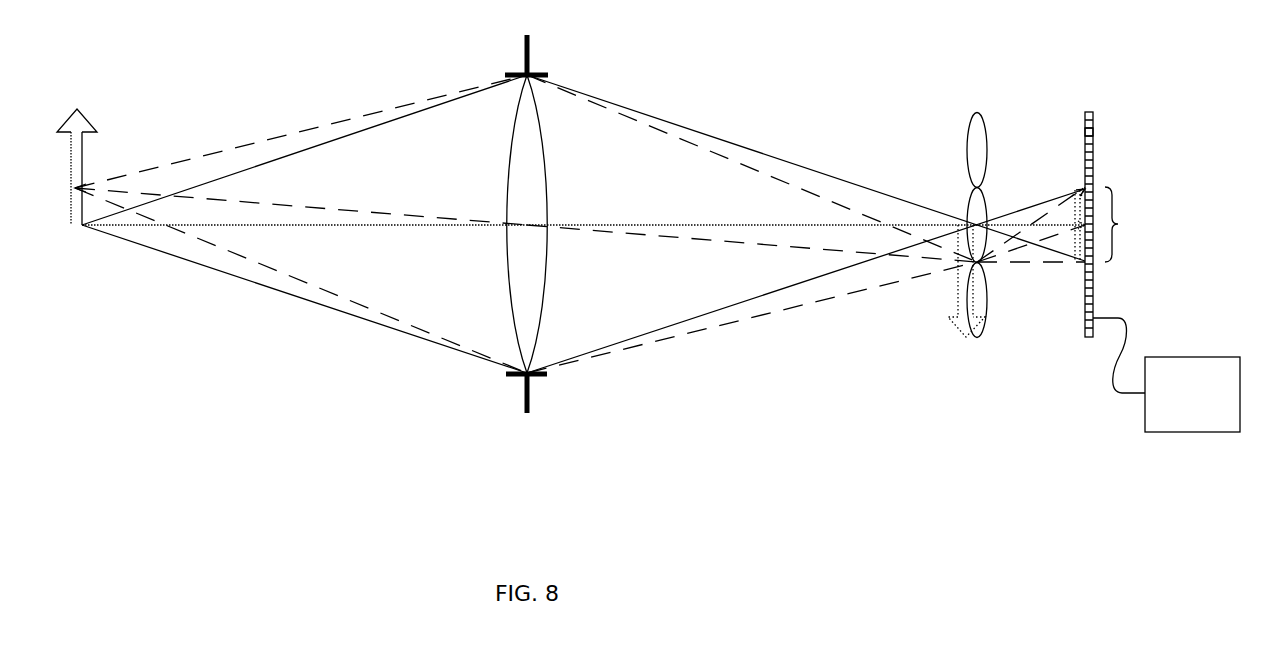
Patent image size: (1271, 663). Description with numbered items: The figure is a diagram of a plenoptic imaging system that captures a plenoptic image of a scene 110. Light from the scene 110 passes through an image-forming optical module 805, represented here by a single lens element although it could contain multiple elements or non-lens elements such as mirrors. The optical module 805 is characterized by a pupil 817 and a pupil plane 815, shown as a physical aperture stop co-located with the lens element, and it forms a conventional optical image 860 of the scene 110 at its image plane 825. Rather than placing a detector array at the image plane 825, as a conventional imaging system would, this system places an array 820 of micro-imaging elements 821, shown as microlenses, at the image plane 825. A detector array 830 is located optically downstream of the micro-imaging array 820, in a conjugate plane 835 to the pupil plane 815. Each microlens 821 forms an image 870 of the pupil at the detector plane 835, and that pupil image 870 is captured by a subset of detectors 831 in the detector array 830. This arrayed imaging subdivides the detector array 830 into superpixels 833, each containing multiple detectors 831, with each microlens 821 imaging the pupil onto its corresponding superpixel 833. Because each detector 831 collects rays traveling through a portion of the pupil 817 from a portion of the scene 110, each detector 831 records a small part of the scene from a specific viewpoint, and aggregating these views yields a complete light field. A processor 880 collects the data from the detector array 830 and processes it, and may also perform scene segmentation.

The scene 110 is at (76, 157).
The image-forming optical module 805 is at (458, 29).
The pupil plane 815 is at (527, 413).
The pupil 817 is at (511, 392).
The array of micro-imaging elements 820 is at (991, 209).
The micro-imaging element 821 is at (957, 105).
The image plane 825 is at (977, 337).
The detector array 830 is at (1105, 209).
The detector 831 is at (1068, 105).
The superpixel 833 is at (1134, 224).
The conjugate plane 835 is at (1089, 337).
The optical image 860 is at (958, 297).
The image of the pupil 870 is at (1061, 214).
The processor 880 is at (1166, 375).